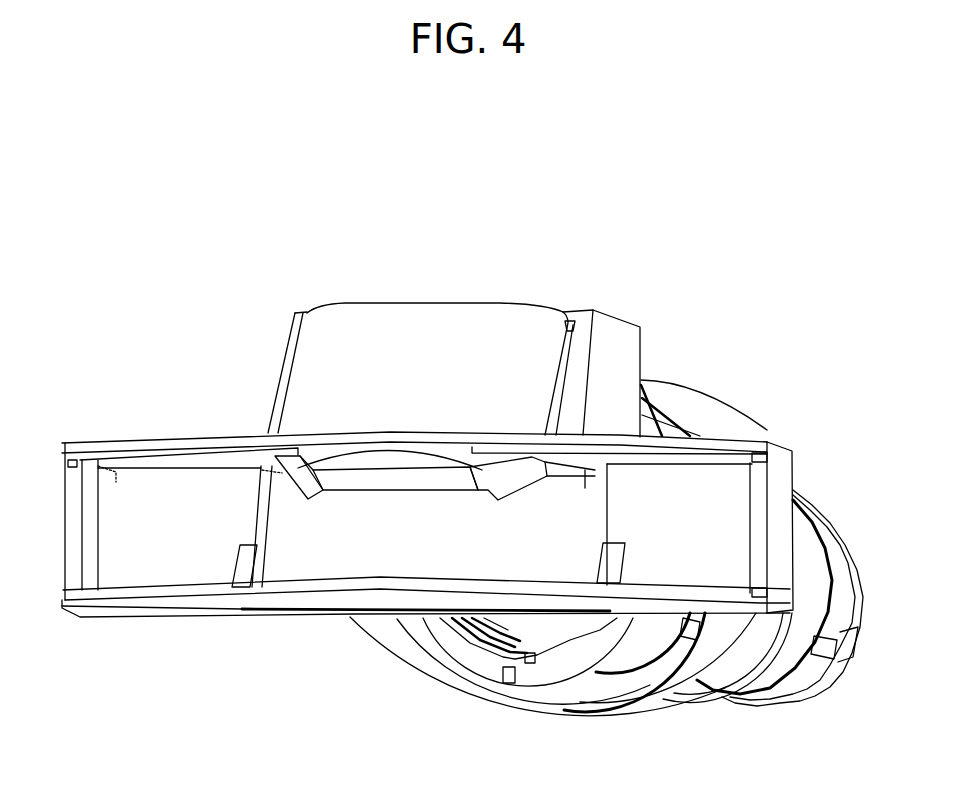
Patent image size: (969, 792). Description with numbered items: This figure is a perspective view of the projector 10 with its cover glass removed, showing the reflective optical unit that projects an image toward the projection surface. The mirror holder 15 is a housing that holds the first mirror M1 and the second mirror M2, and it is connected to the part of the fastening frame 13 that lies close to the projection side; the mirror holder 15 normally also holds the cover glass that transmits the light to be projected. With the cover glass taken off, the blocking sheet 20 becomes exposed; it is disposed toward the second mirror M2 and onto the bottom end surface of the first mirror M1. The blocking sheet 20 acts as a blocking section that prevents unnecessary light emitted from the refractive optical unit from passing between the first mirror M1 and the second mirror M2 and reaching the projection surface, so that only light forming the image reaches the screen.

The projector 10 is at (694, 248).
The fastening frame 13 is at (723, 410).
The mirror holder 15 is at (621, 293).
The blocking sheet 20 is at (377, 480).
The first mirror M1 is at (385, 333).
The second mirror M2 is at (295, 530).